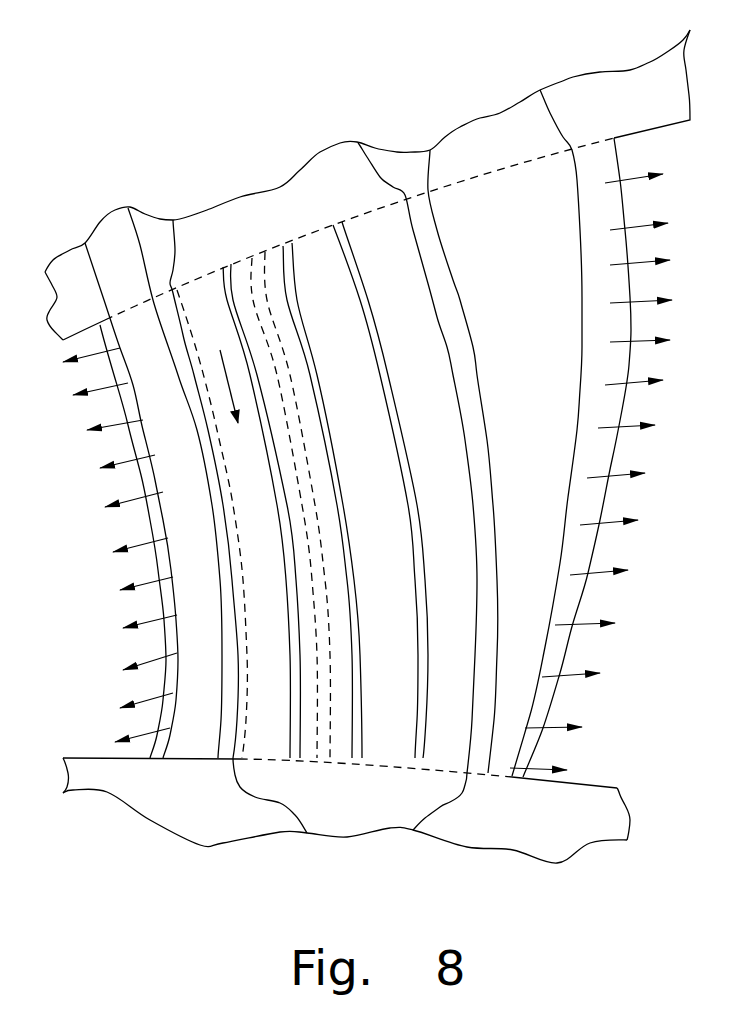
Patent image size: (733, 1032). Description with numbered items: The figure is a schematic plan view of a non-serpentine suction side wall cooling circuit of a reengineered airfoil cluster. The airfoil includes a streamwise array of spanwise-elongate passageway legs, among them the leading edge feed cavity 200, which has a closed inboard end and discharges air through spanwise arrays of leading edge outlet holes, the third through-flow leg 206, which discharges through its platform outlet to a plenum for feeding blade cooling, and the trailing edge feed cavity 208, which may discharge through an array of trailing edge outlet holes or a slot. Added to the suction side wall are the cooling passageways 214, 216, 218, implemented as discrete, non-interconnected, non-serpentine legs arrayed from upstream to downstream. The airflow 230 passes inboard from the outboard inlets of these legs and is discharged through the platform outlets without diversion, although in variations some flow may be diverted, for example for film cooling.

The leading edge feed cavity 200 is at (142, 343).
The third through-flow leg 206 is at (398, 267).
The trailing edge feed cavity 208 is at (557, 206).
The cooling passageway 214 is at (201, 303).
The cooling passageway 216 is at (252, 277).
The cooling passageway 218 is at (318, 263).
The airflow 230 is at (227, 380).